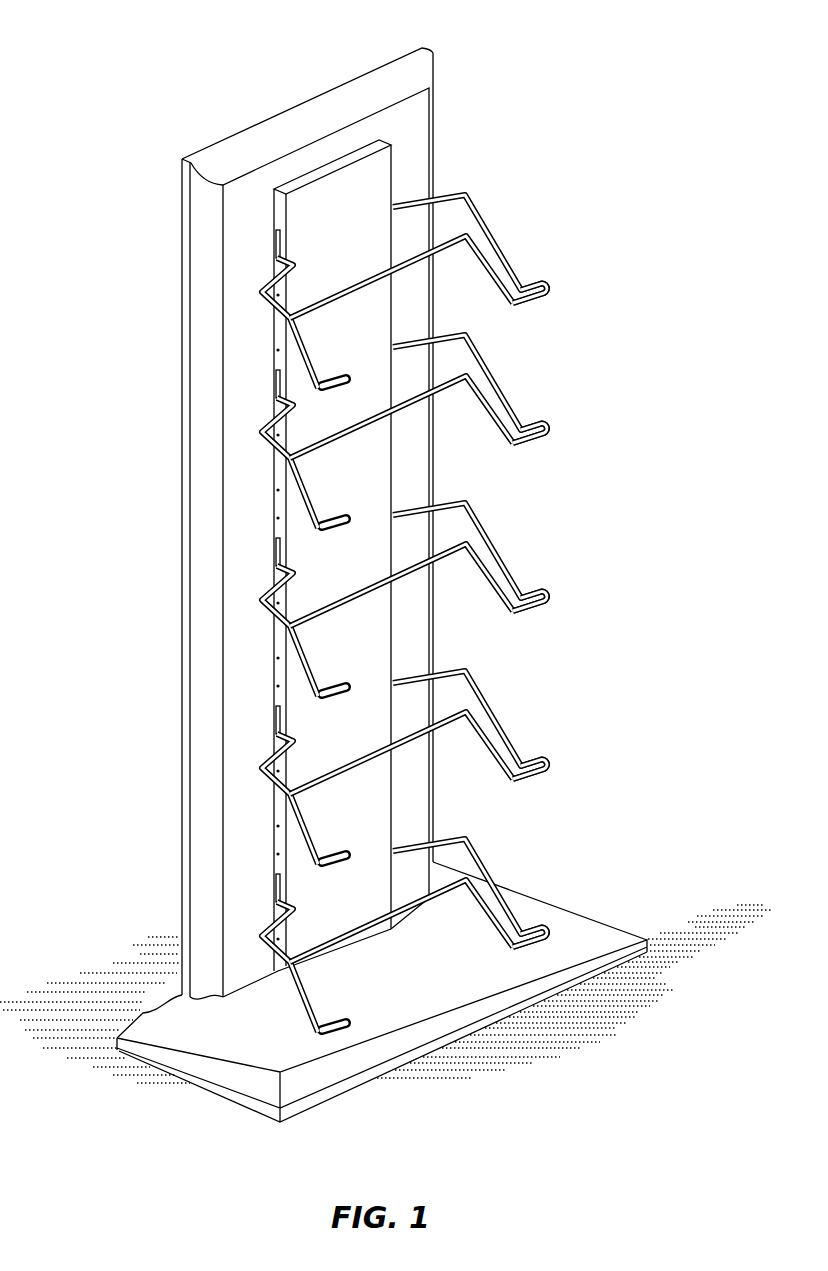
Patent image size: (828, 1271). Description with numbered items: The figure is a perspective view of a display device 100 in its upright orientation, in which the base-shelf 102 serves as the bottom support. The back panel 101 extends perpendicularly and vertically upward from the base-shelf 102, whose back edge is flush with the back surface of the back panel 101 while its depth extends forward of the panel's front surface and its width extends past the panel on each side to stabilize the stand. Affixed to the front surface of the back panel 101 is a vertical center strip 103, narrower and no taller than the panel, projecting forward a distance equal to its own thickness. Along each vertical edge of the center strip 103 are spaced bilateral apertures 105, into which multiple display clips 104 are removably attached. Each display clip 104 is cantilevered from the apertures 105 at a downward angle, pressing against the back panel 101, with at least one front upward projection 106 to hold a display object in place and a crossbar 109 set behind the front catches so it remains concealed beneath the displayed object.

The display device 100 is at (386, 571).
The back panel 101 is at (408, 123).
The base-shelf 102 is at (562, 923).
The center strip 103 is at (368, 446).
The display clip 104 is at (474, 200).
The apertures 105 is at (278, 518).
The front upward projection 106 is at (547, 287).
The crossbar 109 is at (372, 752).